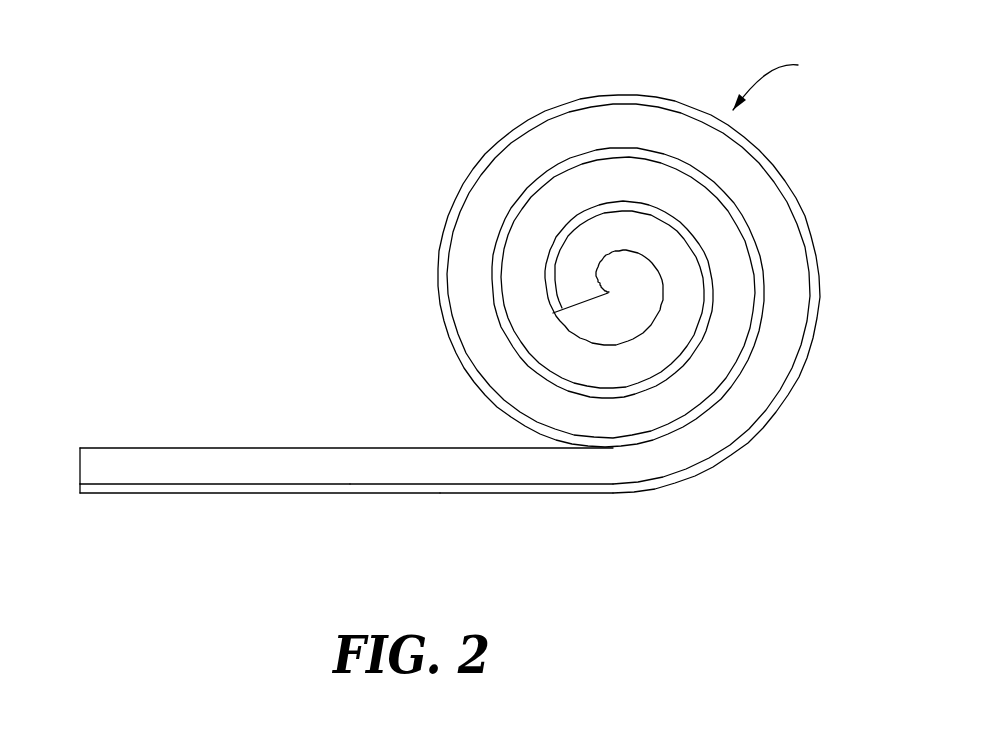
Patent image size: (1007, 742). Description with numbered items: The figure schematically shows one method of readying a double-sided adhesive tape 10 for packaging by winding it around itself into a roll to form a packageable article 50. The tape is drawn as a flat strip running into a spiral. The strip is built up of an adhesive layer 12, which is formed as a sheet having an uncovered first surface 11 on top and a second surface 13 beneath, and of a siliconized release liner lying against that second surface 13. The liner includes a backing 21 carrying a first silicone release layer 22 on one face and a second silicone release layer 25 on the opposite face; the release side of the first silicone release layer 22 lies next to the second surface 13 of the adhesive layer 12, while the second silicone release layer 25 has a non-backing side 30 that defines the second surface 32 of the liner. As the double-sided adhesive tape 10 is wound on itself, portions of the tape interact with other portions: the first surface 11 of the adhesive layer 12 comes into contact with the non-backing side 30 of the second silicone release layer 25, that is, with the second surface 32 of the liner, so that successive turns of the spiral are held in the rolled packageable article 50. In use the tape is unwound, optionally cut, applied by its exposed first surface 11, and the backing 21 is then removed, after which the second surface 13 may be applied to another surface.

The double-sided adhesive tape 10 is at (173, 328).
The first surface of the adhesive layer 11 is at (310, 447).
The adhesive layer 12 is at (175, 462).
The second surface of the adhesive layer 13 is at (495, 485).
The backing 21 is at (287, 485).
The first silicone release layer 22 is at (198, 483).
The second silicone release layer 25 is at (337, 494).
The non-backing side of the second silicone release layer 30 is at (457, 365).
The second surface of siliconized release liner 32 is at (545, 494).
The packageable article 50 is at (784, 82).